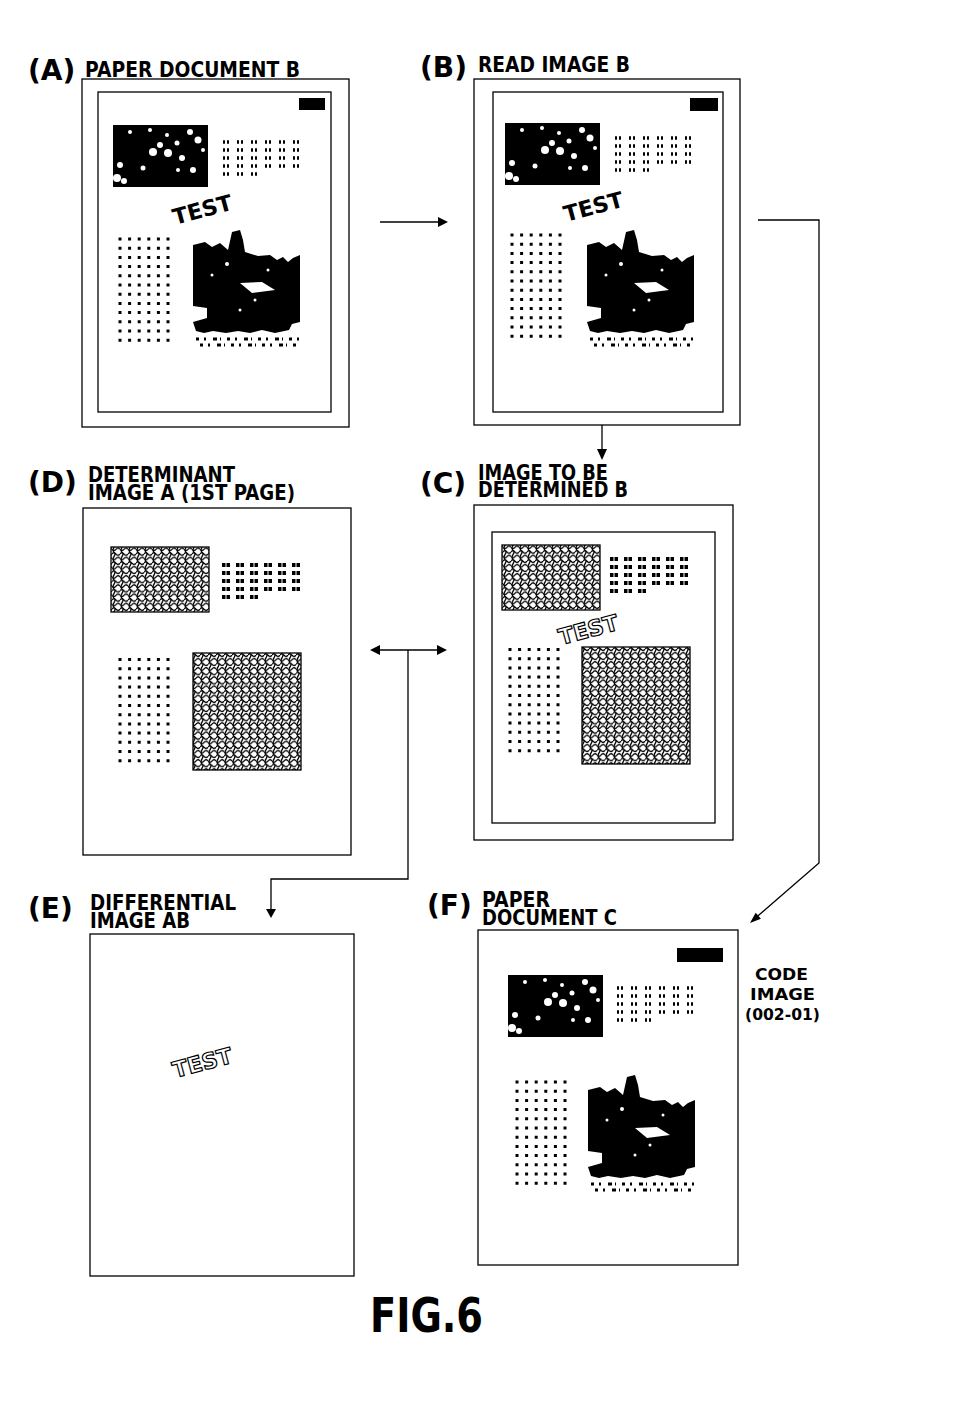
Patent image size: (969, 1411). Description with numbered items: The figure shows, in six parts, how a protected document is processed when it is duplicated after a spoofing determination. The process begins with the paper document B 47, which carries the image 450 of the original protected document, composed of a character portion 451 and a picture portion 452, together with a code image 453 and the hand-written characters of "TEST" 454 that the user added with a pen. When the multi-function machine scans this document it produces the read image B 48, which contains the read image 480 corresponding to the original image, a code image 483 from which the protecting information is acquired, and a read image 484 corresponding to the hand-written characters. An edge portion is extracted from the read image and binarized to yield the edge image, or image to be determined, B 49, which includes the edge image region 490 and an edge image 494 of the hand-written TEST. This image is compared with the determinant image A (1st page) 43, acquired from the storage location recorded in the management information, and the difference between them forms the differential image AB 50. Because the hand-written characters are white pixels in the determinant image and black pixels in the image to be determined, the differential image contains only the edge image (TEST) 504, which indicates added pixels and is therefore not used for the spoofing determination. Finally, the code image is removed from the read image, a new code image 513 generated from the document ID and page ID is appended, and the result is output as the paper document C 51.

The paper document B 47 is at (315, 79).
The read image B 48 is at (665, 79).
The edge image (image to be determined) B 49 is at (672, 505).
The determinant image A (1st page) 43 is at (351, 525).
The differential image AB 50 is at (352, 953).
The paper document C 51 is at (660, 930).
The image of paper document A (1st page) 450 is at (97, 122).
The character portion 451 is at (302, 155).
The picture portion 452 is at (113, 173).
The code image 453 is at (326, 103).
The hand-written characters of TEST 454 is at (172, 218).
The read image 480 is at (740, 143).
The code image 483 is at (718, 102).
The read image of hand-written characters 484 is at (625, 203).
The image region to be determined 490 is at (715, 575).
The edge image (TEST) 494 is at (620, 622).
The edge image (TEST) in differential image 504 is at (172, 1072).
The code image (002-01) 513 is at (723, 955).